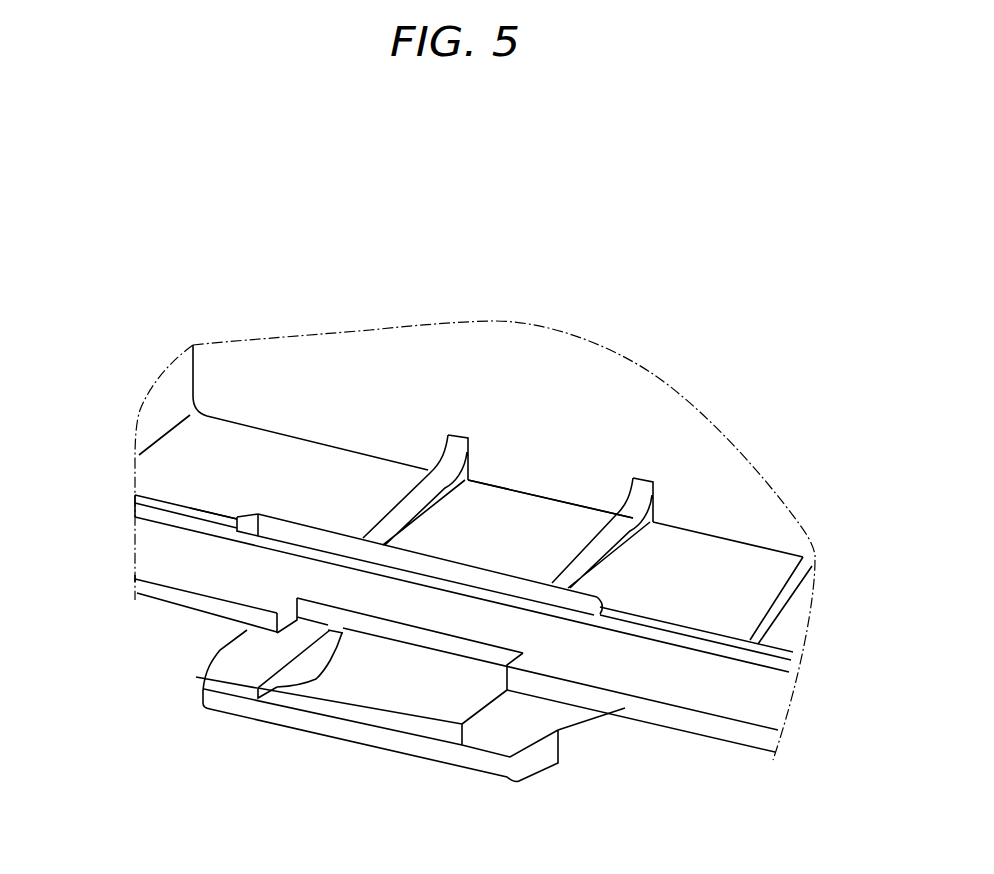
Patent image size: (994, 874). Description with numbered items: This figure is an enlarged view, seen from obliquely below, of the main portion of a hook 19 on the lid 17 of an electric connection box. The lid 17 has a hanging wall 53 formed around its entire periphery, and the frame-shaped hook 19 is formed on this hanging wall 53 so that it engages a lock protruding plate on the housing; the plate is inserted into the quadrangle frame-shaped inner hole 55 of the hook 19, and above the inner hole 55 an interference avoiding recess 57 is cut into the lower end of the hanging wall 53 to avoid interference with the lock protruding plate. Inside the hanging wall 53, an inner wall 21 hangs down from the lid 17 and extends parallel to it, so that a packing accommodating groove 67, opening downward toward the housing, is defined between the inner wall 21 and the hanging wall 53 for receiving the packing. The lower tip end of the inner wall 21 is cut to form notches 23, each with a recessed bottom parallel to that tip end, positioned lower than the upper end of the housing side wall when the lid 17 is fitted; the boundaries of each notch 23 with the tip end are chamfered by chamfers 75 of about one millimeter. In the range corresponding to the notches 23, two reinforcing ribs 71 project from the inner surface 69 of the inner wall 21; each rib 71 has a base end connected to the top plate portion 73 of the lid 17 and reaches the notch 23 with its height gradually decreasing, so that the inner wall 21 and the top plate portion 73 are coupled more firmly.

The lid 17 is at (509, 303).
The hook 19 is at (441, 724).
The inner wall 21 is at (293, 481).
The notch 23 is at (297, 534).
The hanging wall 53 is at (703, 727).
The inner hole 55 is at (317, 657).
The interference avoiding recess 57 is at (420, 640).
The packing accommodating groove 67 is at (227, 533).
The inner surface 69 is at (521, 526).
The reinforcing rib 71 is at (417, 490).
The top plate portion 73 is at (732, 475).
The chamfer 75 is at (137, 450).